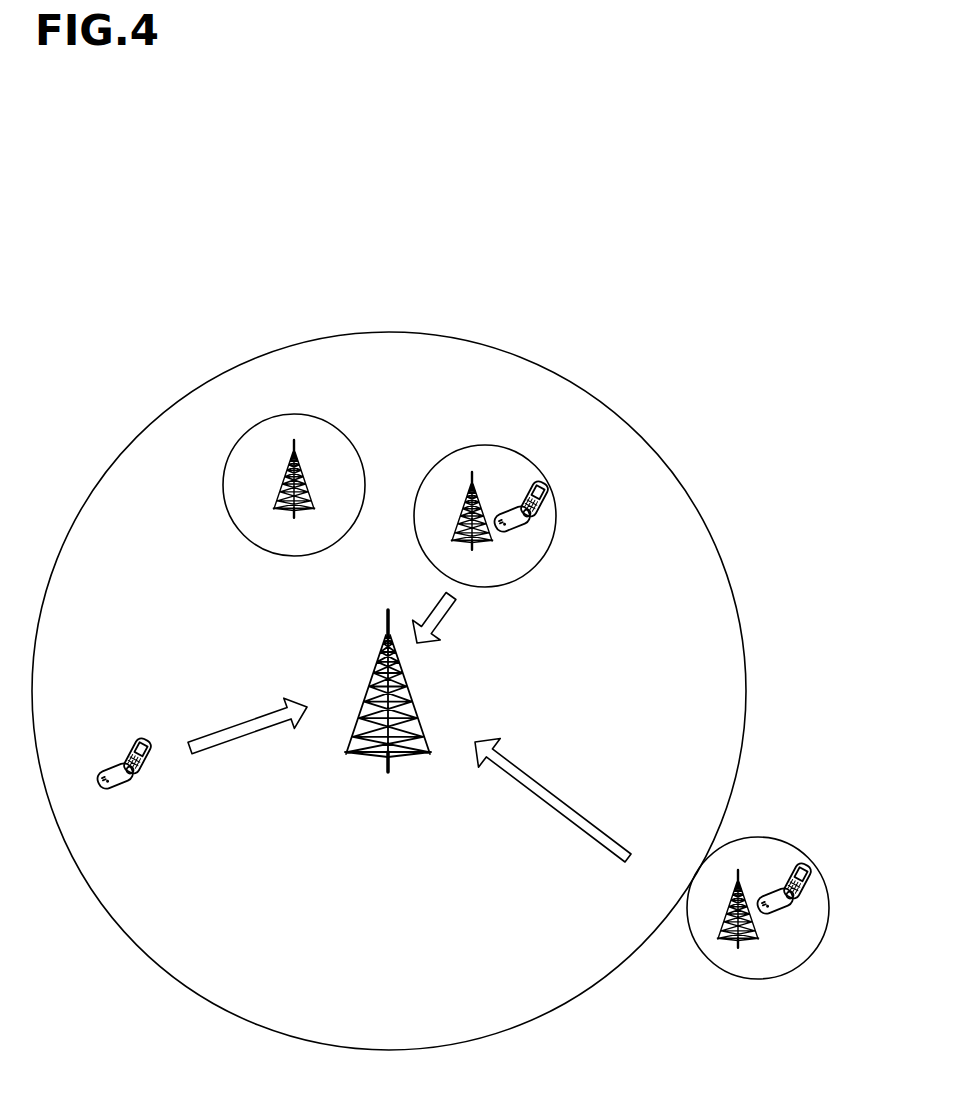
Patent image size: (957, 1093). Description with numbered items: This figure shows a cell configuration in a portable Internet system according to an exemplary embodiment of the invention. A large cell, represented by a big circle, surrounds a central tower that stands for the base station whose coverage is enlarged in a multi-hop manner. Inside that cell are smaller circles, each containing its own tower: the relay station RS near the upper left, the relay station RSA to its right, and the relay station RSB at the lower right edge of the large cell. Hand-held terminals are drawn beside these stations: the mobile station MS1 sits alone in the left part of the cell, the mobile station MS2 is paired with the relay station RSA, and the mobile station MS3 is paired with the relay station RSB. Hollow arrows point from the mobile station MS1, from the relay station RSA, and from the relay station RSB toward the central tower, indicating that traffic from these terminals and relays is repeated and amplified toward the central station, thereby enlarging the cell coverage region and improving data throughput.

The relay station RS is at (294, 485).
The relay station A RSA is at (485, 516).
The relay station B RSB is at (758, 908).
The mobile station 1 MS1 is at (124, 778).
The mobile station 2 MS2 is at (541, 504).
The mobile station 3 MS3 is at (806, 886).